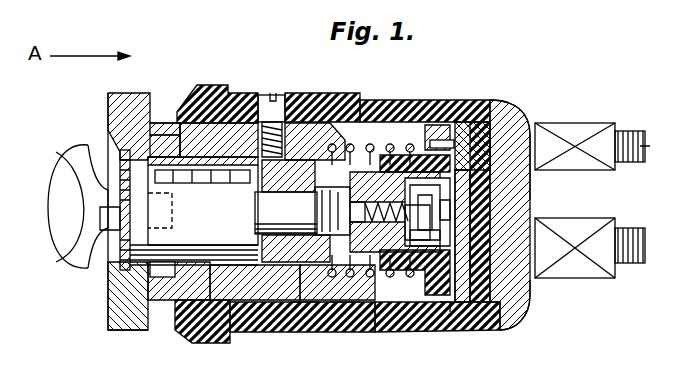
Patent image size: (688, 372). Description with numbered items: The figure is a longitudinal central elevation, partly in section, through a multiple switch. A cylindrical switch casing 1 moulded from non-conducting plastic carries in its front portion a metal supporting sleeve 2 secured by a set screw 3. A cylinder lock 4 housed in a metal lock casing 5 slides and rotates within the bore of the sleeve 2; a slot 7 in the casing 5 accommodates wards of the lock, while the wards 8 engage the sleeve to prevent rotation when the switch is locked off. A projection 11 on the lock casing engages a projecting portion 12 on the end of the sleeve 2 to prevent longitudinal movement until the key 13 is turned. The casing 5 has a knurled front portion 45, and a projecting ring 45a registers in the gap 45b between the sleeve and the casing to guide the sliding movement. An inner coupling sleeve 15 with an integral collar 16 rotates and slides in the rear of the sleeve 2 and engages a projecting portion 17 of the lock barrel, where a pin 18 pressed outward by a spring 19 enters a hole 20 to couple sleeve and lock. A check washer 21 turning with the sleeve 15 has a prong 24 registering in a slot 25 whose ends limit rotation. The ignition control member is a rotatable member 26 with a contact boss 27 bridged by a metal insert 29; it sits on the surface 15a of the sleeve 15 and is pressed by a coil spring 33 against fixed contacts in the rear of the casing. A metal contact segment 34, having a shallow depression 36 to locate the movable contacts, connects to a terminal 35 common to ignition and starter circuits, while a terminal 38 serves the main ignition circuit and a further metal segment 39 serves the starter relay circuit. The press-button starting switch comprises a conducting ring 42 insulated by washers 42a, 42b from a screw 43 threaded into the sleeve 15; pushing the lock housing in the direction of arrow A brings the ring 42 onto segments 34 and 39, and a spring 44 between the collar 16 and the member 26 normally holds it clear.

The cylindrical switch casing 1 is at (522, 125).
The metal supporting sleeve 2 is at (200, 332).
The set screw 3 is at (268, 112).
The cylinder lock 4 is at (122, 262).
The lock casing 5 is at (150, 282).
The slot 7 is at (244, 184).
The wards 8 is at (166, 177).
The projection 11 is at (174, 213).
The projecting portion 12 is at (190, 283).
The key 13 is at (62, 207).
The inner coupling sleeve 15 is at (385, 326).
The surface of coupling sleeve 15a is at (505, 322).
The projecting collar 16 is at (338, 120).
The projecting portion of the lock barrel 17 is at (320, 207).
The pin 18 is at (368, 160).
The spring 19 is at (318, 224).
The hole 20 is at (370, 130).
The check washer 21 is at (304, 120).
The projecting prong 24 is at (340, 326).
The slot 25 is at (300, 326).
The rotatable member 26 is at (490, 326).
The contact boss 27 is at (482, 145).
The metal insert 29 is at (450, 124).
The coil spring 33 is at (442, 326).
The metal contact segment 34 is at (488, 150).
The terminal 35 is at (574, 142).
The shallow depression 36 is at (508, 140).
The terminal 38 is at (582, 270).
The metal segment 39 is at (445, 240).
The conducting ring 42 is at (485, 275).
The insulating washer 42a is at (422, 120).
The insulating washer 42b is at (470, 222).
The screw 43 is at (470, 202).
The spring 44 is at (410, 322).
The front portion 45 is at (126, 122).
The projecting ring 45a is at (160, 122).
The gap 45b is at (207, 90).